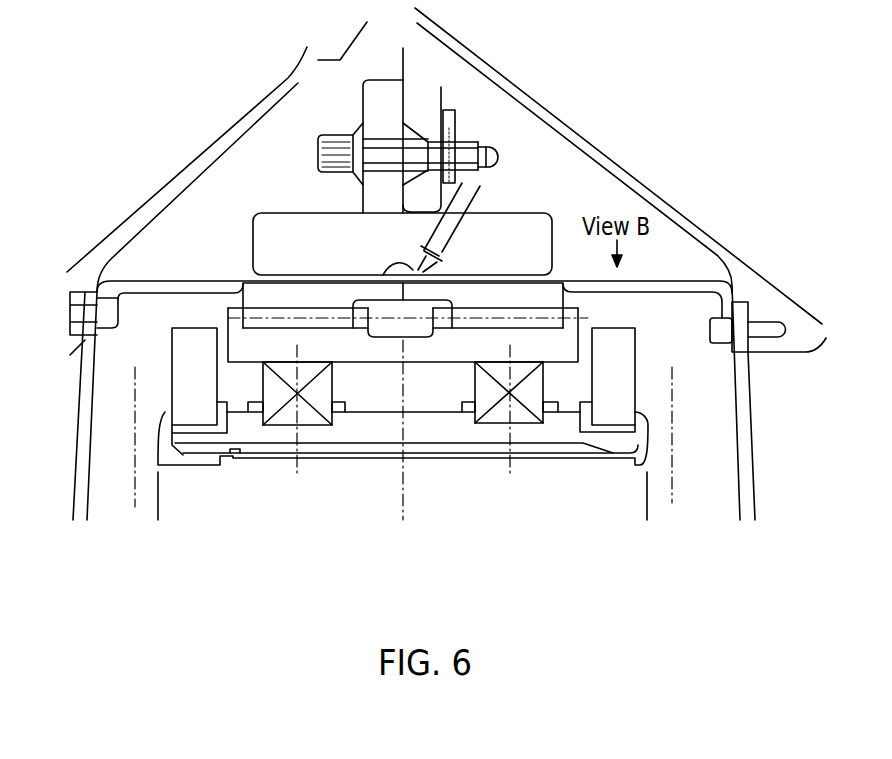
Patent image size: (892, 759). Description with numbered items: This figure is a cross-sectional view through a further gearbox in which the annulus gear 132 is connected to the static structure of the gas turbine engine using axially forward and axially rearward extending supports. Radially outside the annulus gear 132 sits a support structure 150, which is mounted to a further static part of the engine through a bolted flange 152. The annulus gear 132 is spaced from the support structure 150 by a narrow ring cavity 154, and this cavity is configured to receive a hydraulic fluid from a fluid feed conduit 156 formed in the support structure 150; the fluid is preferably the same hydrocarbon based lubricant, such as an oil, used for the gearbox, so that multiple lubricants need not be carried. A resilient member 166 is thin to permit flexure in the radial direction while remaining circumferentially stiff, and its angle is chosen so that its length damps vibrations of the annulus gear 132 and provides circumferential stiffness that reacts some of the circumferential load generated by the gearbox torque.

The annulus gear 132 is at (553, 297).
The support structure 150 is at (523, 255).
The bolted flange 152 is at (388, 100).
The narrow ring cavity 154 is at (280, 273).
The fluid feed conduit 156 is at (482, 191).
The resilient member 166 is at (672, 279).